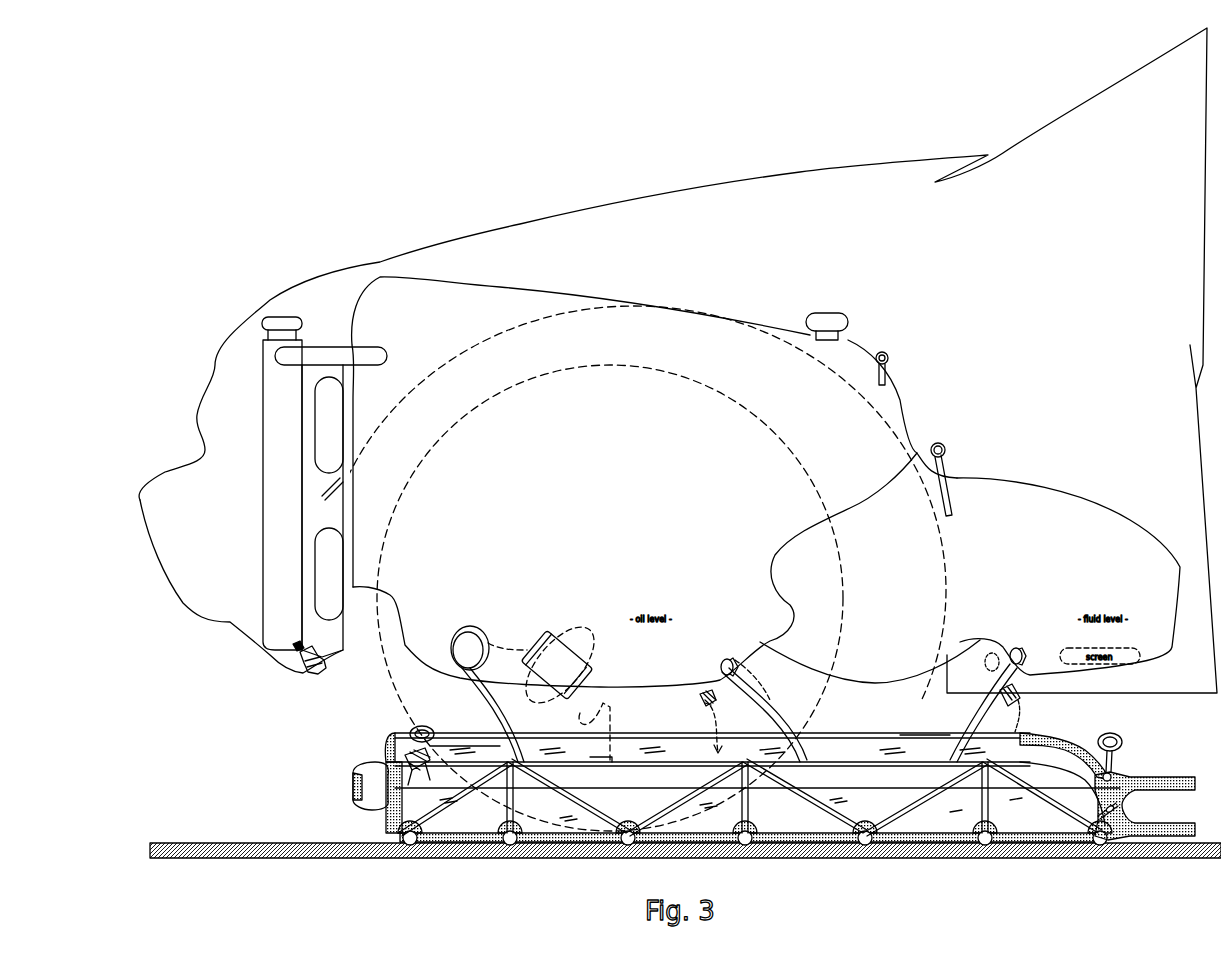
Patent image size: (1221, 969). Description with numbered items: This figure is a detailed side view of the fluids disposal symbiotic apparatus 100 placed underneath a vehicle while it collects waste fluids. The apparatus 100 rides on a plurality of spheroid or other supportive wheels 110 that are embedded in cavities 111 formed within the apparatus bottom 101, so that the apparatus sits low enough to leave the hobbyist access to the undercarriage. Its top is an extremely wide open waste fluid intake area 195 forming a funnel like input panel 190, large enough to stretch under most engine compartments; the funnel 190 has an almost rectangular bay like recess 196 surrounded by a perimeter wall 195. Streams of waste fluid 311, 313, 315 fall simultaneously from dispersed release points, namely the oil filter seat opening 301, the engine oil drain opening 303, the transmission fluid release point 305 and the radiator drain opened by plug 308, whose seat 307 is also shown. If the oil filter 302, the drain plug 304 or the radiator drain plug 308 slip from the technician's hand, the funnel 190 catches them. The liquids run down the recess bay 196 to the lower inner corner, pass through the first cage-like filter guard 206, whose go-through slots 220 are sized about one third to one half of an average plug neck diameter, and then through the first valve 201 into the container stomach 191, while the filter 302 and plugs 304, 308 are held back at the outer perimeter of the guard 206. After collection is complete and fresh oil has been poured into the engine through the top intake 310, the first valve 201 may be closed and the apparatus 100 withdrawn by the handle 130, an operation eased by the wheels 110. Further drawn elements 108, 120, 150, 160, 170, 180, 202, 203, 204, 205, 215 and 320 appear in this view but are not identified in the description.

The fluids disposal symbiotic apparatus 100 is at (305, 786).
The apparatus bottom 101 is at (808, 850).
The rear frame member 108 is at (1135, 838).
The wheels 110 is at (510, 846).
The cavities 111 is at (395, 833).
The truss diagonal members 120 is at (892, 810).
The handle 130 is at (353, 790).
The main fluid conduit 150 is at (855, 740).
The fluid level line 160 is at (852, 788).
The rear conduit bend 170 is at (1085, 748).
The rear fork outlet 180 is at (1192, 790).
The funnel like input panel 190 is at (481, 745).
The container stomach 191 is at (946, 830).
The waste fluid intake area 195 is at (916, 735).
The recess bay 196 is at (620, 755).
The first valve 201 is at (410, 733).
The rear outlet passage 202 is at (1125, 800).
The rear fill ring 203 is at (1124, 740).
The rear port 204 is at (1113, 774).
The rear valve 205 is at (1102, 808).
The first cage-like filter guard 206 is at (386, 748).
The rear conduit top wall 215 is at (1058, 735).
The go-through slots 220 is at (432, 760).
The oil filter seat opening 301 is at (470, 648).
The oil filter 302 is at (568, 645).
The engine oil drain opening 303 is at (724, 668).
The drain plug 304 is at (698, 698).
The transmission fluid release point 305 is at (1016, 648).
The seat 307 is at (298, 650).
The radiator drain plug 308 is at (320, 668).
The top intake 310 is at (833, 313).
The waste fluid 311 is at (502, 715).
The waste fluid 313 is at (764, 711).
The waste fluid 315 is at (981, 707).
The vehicle hood 320 is at (586, 208).